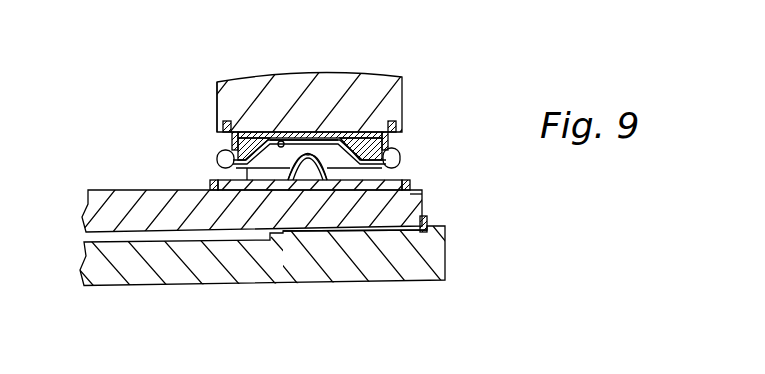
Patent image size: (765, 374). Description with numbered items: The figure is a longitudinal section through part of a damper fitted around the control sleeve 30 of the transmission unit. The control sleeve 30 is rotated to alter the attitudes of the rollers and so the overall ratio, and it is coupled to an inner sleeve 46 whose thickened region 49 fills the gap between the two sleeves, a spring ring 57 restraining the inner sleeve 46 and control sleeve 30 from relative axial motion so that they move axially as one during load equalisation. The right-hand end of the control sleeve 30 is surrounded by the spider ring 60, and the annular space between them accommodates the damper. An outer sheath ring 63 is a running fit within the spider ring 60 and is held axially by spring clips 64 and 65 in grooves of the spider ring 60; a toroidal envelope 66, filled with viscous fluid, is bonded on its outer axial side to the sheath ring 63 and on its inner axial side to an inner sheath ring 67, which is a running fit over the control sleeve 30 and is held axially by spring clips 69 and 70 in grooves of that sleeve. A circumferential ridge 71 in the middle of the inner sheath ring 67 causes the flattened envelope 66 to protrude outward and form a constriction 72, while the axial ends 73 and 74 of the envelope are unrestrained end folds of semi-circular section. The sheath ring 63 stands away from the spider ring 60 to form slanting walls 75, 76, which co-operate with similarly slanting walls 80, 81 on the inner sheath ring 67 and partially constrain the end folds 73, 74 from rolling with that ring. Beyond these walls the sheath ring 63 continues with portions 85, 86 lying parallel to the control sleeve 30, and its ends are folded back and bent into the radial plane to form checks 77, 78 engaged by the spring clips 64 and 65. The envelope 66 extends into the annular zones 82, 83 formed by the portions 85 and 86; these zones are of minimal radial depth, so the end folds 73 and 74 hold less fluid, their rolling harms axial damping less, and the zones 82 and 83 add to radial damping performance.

The control sleeve 30 is at (98, 191).
The inner sleeve 46 is at (128, 270).
The thickened region 49 is at (348, 237).
The spring ring 57 is at (428, 221).
The spider ring 60 is at (298, 82).
The outer sheath ring 63 is at (224, 122).
The spring clip 64 is at (236, 140).
The spring clip 65 is at (396, 124).
The toroidal envelope 66 is at (285, 139).
The inner sheath ring 67 is at (250, 182).
The spring clip 69 is at (212, 183).
The spring clip 70 is at (412, 185).
The ridge 71 is at (308, 159).
The constriction 72 is at (312, 140).
The axial end 73 is at (220, 152).
The axial end 74 is at (392, 162).
The slanting wall 75 is at (280, 141).
The slanting wall 76 is at (362, 145).
The check 77 is at (262, 143).
The check 78 is at (352, 148).
The slanting wall 80 is at (300, 174).
The slanting wall 81 is at (318, 174).
The annular zone 82 is at (262, 168).
The annular zone 83 is at (413, 194).
The portion 85 is at (253, 145).
The portion 86 is at (390, 140).